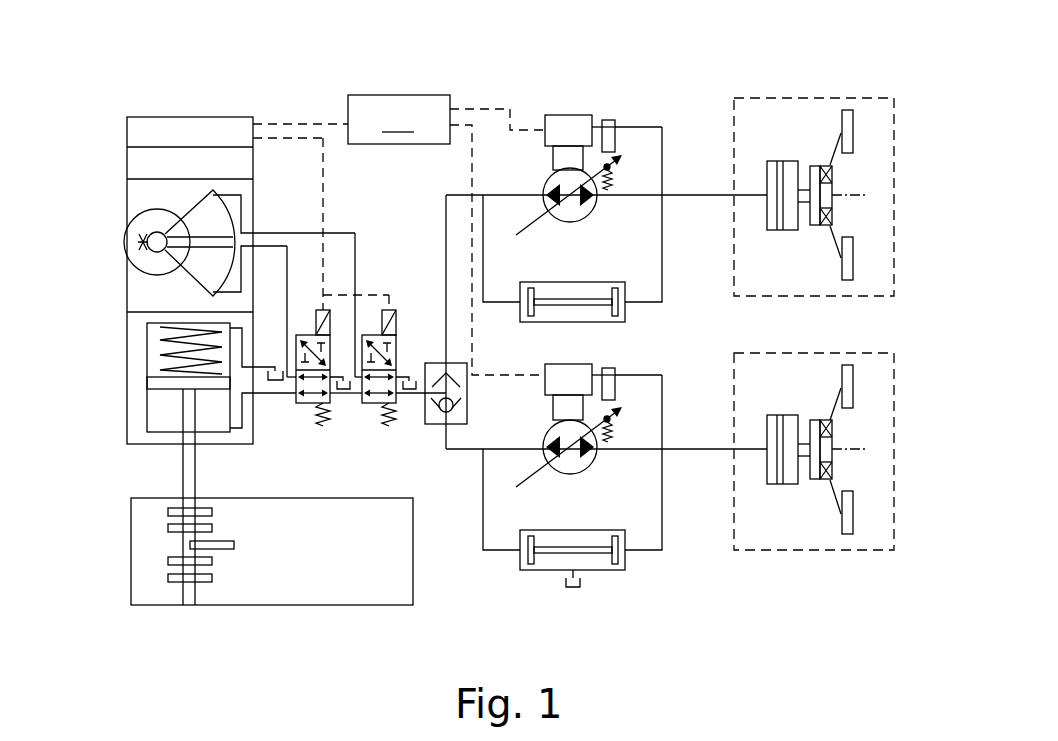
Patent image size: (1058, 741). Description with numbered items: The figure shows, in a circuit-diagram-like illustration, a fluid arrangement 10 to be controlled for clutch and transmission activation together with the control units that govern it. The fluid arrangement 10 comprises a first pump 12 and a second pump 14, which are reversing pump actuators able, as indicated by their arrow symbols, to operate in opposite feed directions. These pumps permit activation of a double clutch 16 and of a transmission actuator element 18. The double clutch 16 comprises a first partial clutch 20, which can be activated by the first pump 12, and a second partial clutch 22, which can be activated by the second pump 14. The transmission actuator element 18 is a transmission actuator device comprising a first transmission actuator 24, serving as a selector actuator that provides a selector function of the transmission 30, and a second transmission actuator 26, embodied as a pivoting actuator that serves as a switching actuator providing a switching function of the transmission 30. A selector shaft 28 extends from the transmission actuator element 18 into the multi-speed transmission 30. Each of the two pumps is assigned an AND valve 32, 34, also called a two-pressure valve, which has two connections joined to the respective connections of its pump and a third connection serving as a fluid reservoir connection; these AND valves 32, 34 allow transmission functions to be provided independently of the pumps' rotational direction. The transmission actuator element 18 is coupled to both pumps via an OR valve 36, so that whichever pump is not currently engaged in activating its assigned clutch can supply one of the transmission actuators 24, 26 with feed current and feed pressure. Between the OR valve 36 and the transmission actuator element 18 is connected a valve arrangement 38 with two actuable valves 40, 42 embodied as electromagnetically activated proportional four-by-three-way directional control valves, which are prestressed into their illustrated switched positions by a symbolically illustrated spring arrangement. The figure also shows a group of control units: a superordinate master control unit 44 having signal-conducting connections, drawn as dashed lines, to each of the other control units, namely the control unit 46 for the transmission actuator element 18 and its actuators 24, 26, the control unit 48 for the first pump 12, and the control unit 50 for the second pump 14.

The fluid arrangement 10 is at (700, 88).
The first pump 12 is at (578, 222).
The second pump 14 is at (576, 472).
The double clutch 16 is at (824, 88).
The transmission actuator element 18 is at (106, 118).
The first partial clutch 20 is at (895, 296).
The second partial clutch 22 is at (895, 550).
The first transmission actuator 24 is at (127, 402).
The second transmission actuator 26 is at (127, 285).
The selector shaft 28 is at (183, 592).
The transmission 30 is at (349, 566).
The AND valve 32 is at (625, 310).
The AND valve 34 is at (625, 558).
The OR valve 36 is at (432, 425).
The valve arrangement 38 is at (381, 235).
The proportional directional control valve 40 is at (397, 335).
The proportional directional control valve 42 is at (298, 335).
The superordinate control unit 44 is at (446, 235).
The control unit 46 is at (185, 117).
The control unit 48 is at (570, 115).
The control unit 50 is at (545, 370).